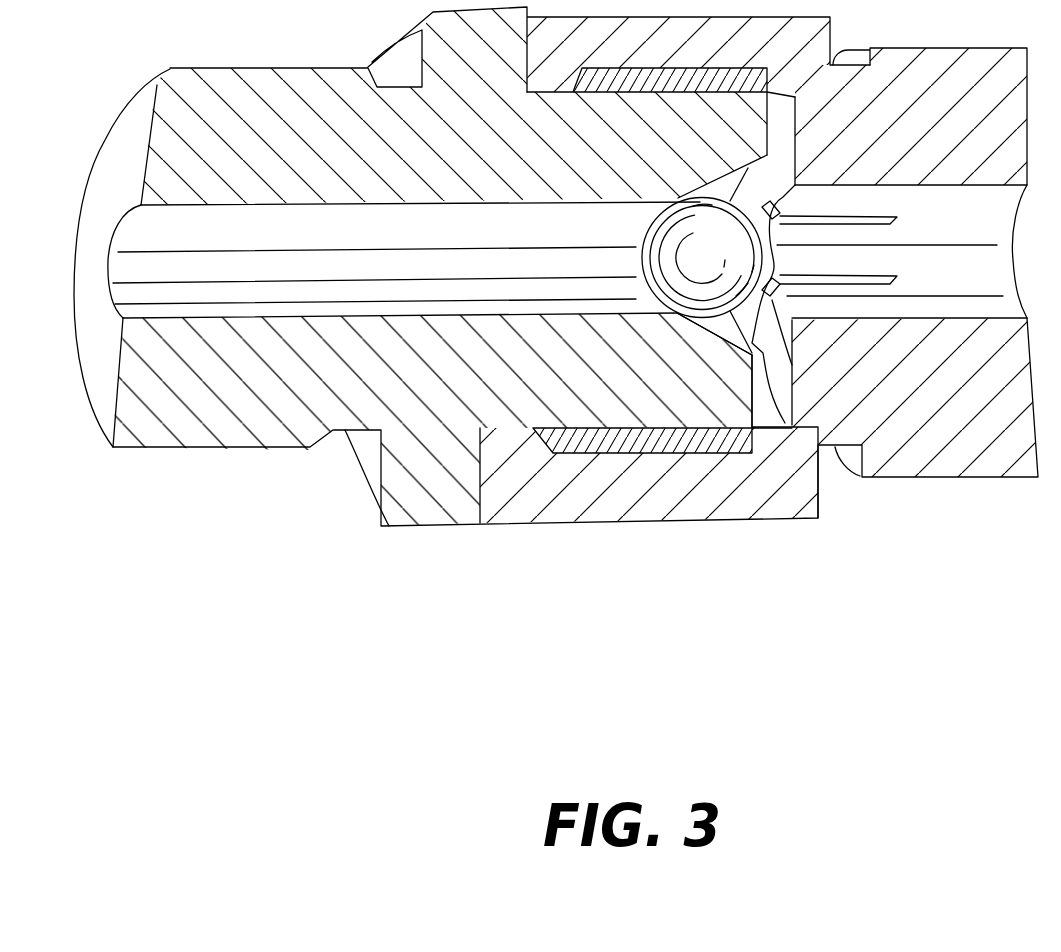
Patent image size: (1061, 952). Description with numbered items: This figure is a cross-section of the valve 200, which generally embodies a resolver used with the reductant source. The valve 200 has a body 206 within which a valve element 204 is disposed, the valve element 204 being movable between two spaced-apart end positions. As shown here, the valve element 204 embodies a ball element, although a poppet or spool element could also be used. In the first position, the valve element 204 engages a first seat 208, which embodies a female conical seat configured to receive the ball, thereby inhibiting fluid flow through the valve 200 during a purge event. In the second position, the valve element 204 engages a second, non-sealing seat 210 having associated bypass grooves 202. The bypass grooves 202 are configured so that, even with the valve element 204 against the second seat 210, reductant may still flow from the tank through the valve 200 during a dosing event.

The valve 200 is at (352, 596).
The bypass grooves 202 is at (885, 216).
The valve element 204 is at (648, 212).
The body 206 is at (383, 242).
The first seat 208 is at (716, 332).
The second seat 210 is at (790, 382).